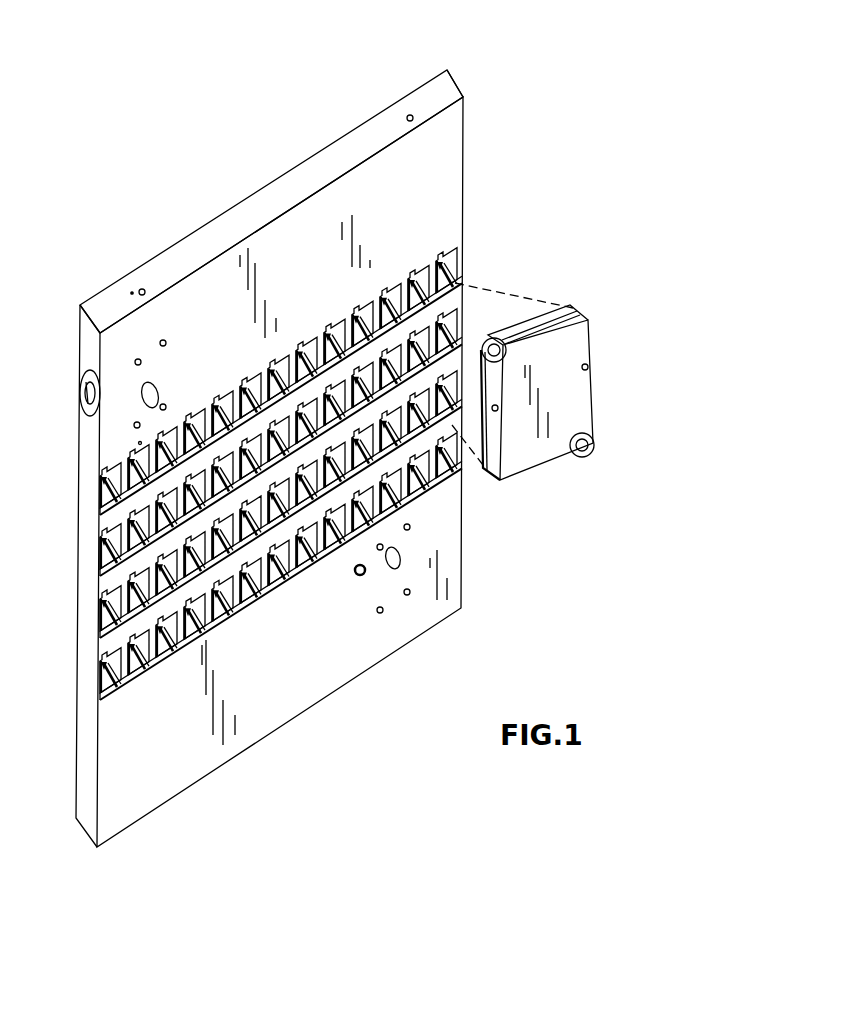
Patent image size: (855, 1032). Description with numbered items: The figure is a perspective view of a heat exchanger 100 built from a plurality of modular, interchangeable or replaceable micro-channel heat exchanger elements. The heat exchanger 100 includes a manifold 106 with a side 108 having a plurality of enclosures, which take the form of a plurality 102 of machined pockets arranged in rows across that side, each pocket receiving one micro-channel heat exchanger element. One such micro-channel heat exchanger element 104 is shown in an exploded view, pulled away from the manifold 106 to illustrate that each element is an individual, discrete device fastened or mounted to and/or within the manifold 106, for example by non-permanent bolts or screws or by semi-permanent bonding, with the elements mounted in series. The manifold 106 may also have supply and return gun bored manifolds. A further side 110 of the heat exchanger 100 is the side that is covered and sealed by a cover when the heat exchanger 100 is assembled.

The heat exchanger 100 is at (456, 88).
The plurality of machined pockets 102 is at (63, 472).
The micro-channel heat exchanger element 104 is at (528, 462).
The manifold 106 is at (200, 245).
The side 108 is at (366, 645).
The side 110 is at (118, 282).